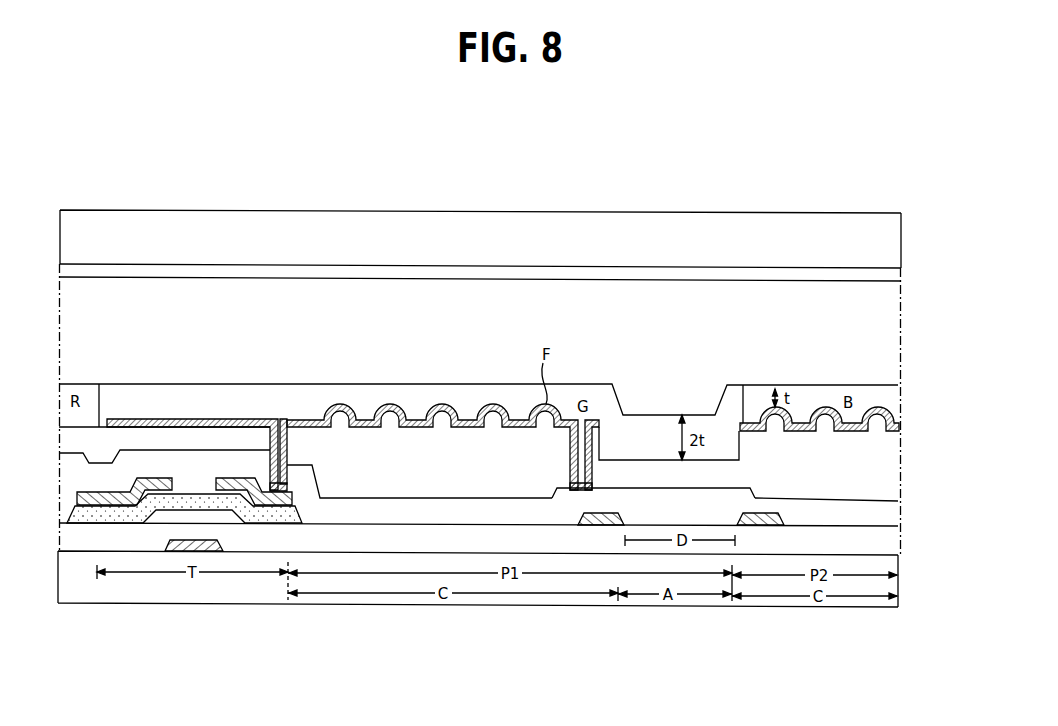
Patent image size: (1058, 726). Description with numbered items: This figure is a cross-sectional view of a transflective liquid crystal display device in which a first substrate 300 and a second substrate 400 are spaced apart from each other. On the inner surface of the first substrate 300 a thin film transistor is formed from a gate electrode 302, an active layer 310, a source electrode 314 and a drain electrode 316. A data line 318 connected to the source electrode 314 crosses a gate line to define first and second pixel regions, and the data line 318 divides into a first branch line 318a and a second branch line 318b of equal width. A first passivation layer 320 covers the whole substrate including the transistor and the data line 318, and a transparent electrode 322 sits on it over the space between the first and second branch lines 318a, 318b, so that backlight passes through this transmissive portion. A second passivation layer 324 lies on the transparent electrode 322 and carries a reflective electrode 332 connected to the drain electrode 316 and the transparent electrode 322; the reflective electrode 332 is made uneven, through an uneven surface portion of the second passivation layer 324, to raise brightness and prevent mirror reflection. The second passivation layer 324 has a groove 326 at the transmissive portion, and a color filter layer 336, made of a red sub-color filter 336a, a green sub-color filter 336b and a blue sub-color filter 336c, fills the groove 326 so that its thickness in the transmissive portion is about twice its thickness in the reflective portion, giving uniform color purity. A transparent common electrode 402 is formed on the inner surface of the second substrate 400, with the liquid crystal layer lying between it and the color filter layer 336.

The first substrate 300 is at (91, 590).
The gate electrode 302 is at (207, 551).
The active layer 310 is at (256, 527).
The source electrode 314 is at (151, 478).
The drain electrode 316 is at (242, 478).
The data line 318 is at (585, 658).
The first branch line 318a is at (593, 525).
The second branch line 318b is at (755, 525).
The first passivation layer 320 is at (195, 455).
The transparent electrode 322 is at (657, 487).
The second passivation layer 324 is at (370, 447).
The groove 326 is at (740, 423).
The reflective electrode 332 is at (497, 402).
The color filter layer 336 is at (247, 163).
The red sub-color filter 336a is at (87, 385).
The green sub-color filter 336b is at (458, 400).
The blue sub-color filter 336c is at (762, 410).
The second substrate 400 is at (109, 245).
The common electrode 402 is at (835, 273).